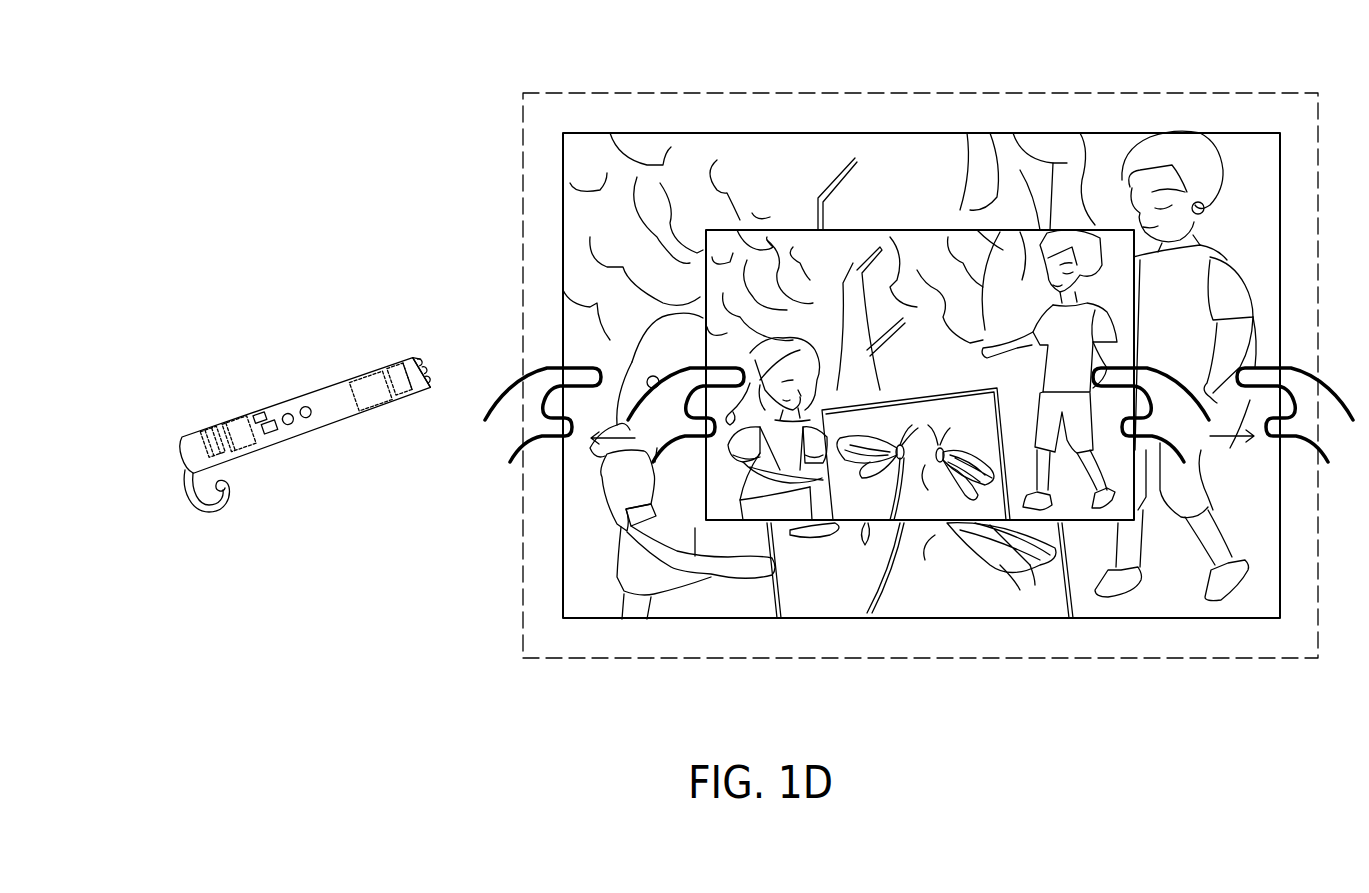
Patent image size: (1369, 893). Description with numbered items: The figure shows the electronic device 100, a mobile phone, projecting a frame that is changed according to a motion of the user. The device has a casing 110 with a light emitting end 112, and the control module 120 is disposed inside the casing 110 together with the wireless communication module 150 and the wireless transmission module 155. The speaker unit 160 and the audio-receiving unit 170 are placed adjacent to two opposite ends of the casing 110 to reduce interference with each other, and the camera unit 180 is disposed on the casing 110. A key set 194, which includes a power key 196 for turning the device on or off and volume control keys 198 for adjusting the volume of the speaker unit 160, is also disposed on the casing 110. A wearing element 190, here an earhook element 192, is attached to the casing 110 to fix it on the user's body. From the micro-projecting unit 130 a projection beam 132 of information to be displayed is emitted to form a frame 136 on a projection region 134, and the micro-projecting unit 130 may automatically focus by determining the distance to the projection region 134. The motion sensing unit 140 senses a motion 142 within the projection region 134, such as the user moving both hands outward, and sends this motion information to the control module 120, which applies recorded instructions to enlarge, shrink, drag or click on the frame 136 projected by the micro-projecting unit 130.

The electronic device 100 is at (321, 426).
The casing 110 is at (357, 380).
The light emitting end 112 is at (413, 361).
The control module 120 is at (384, 412).
The micro-projecting unit 130 is at (434, 370).
The projection beam 132 is at (563, 202).
The projection region 134 is at (1240, 92).
The frame 136 is at (953, 230).
The motion sensing unit 140 is at (434, 380).
The motion 142 is at (623, 440).
The wireless communication module 150 is at (243, 423).
The wireless transmission module 155 is at (259, 413).
The speaker unit 160 is at (207, 432).
The audio-receiving unit 170 is at (412, 398).
The camera unit 180 is at (427, 363).
The wearing element 190 is at (198, 512).
The earhook element 192 is at (196, 503).
The key set 194 is at (325, 479).
The power key 196 is at (275, 429).
The volume control keys 198 is at (293, 425).